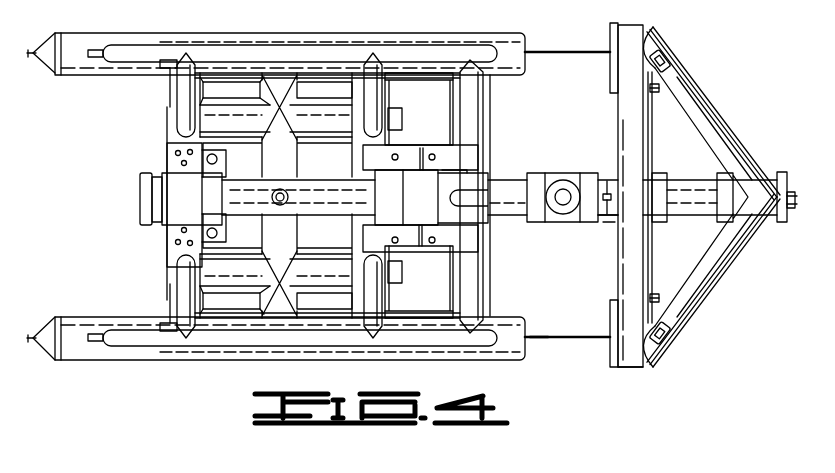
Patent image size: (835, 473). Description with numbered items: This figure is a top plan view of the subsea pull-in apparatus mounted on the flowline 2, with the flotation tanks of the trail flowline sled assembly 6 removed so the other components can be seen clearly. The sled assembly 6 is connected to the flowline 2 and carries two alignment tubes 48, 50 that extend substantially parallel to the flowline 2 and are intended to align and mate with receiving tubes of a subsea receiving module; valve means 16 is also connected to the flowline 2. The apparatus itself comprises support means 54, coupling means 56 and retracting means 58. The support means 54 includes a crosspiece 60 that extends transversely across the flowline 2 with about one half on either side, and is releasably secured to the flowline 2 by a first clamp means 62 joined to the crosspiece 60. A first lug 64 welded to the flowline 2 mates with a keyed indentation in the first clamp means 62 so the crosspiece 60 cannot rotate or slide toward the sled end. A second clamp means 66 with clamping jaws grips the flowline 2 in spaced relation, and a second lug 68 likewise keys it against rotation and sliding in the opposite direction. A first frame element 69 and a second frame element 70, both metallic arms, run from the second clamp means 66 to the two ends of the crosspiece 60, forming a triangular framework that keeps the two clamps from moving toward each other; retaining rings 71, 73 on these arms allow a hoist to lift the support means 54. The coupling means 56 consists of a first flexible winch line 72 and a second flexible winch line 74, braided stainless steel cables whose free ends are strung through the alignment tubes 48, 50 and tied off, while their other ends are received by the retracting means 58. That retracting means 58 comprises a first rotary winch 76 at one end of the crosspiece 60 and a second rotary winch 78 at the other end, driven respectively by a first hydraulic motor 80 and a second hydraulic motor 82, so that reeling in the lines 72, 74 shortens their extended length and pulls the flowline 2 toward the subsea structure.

The flowline bundle 2 is at (505, 182).
The trail flowline sled assembly 6 is at (107, 197).
The valve means 16 is at (562, 174).
The first alignment tube 48 is at (70, 66).
The second alignment tube 50 is at (70, 347).
The support means 54 is at (711, 113).
The coupling means 56 is at (541, 345).
The retracting means 58 is at (637, 377).
The crosspiece 60 is at (625, 250).
The first clamp means 62 is at (611, 222).
The first lug 64 is at (607, 178).
The second clamp means 66 is at (773, 182).
The second lug 68 is at (778, 206).
The first frame element 69 is at (702, 120).
The second frame element 70 is at (711, 280).
The retaining ring 71 is at (667, 56).
The first flexible winch line 72 is at (570, 48).
The retaining ring 73 is at (667, 336).
The second flexible winch line 74 is at (570, 330).
The first rotary winch 76 is at (610, 76).
The second rotary winch 78 is at (610, 350).
The first hydraulic motor 80 is at (657, 93).
The second hydraulic motor 82 is at (657, 294).